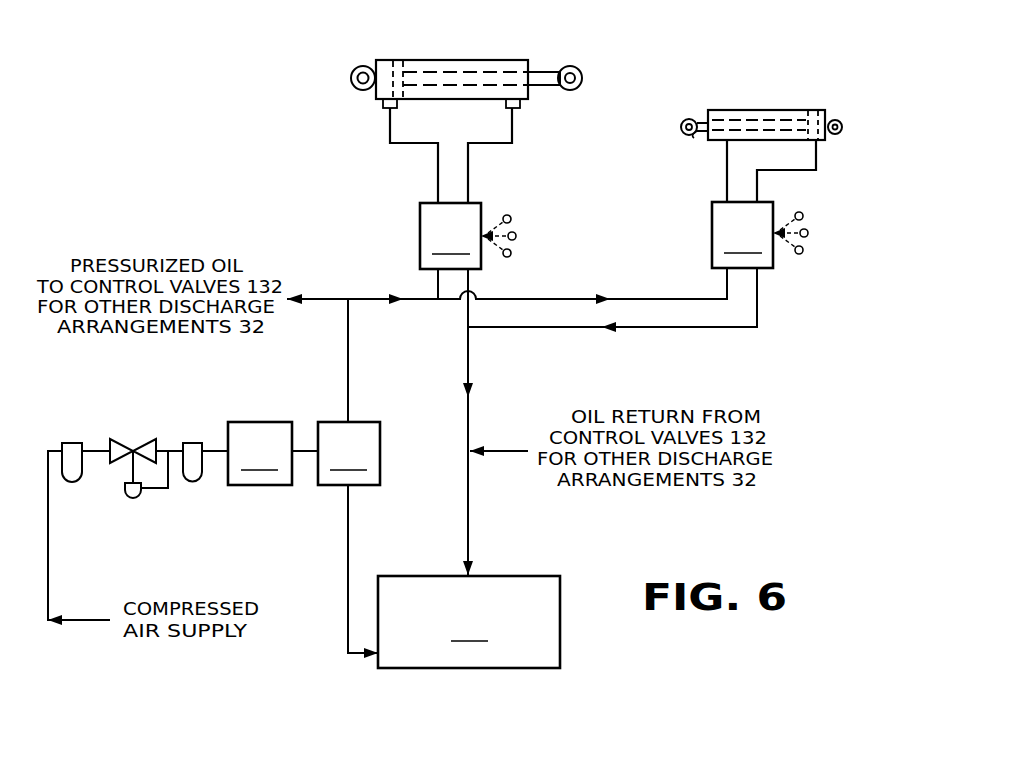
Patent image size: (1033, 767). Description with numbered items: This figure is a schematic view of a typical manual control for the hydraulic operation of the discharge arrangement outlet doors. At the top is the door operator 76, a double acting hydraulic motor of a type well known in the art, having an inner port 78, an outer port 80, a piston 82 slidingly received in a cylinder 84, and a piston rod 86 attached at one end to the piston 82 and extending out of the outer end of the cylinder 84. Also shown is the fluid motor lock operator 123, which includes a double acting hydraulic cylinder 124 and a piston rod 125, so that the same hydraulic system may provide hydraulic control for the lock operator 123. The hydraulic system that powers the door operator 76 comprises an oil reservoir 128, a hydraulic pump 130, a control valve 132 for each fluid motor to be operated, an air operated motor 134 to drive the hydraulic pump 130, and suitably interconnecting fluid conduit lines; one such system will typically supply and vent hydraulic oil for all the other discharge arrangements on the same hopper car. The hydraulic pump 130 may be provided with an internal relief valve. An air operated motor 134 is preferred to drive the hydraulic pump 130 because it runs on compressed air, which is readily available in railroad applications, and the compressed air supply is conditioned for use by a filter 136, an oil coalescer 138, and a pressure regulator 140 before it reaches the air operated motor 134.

The door operator 76 is at (483, 54).
The inner port 78 is at (383, 107).
The outer port 80 is at (518, 110).
The piston 82 is at (396, 58).
The cylinder 84 is at (437, 60).
The piston rod 86 is at (548, 86).
The fluid motor lock operator 123 is at (798, 98).
The double acting hydraulic cylinder 124 is at (755, 110).
The piston rod 125 is at (700, 122).
The oil reservoir 128 is at (469, 622).
The hydraulic pump 130 is at (349, 478).
The control valve 132 is at (614, 235).
The air operated motor 134 is at (273, 453).
The filter 136 is at (71, 443).
The oil coalescer 138 is at (193, 443).
The pressure regulator 140 is at (133, 440).